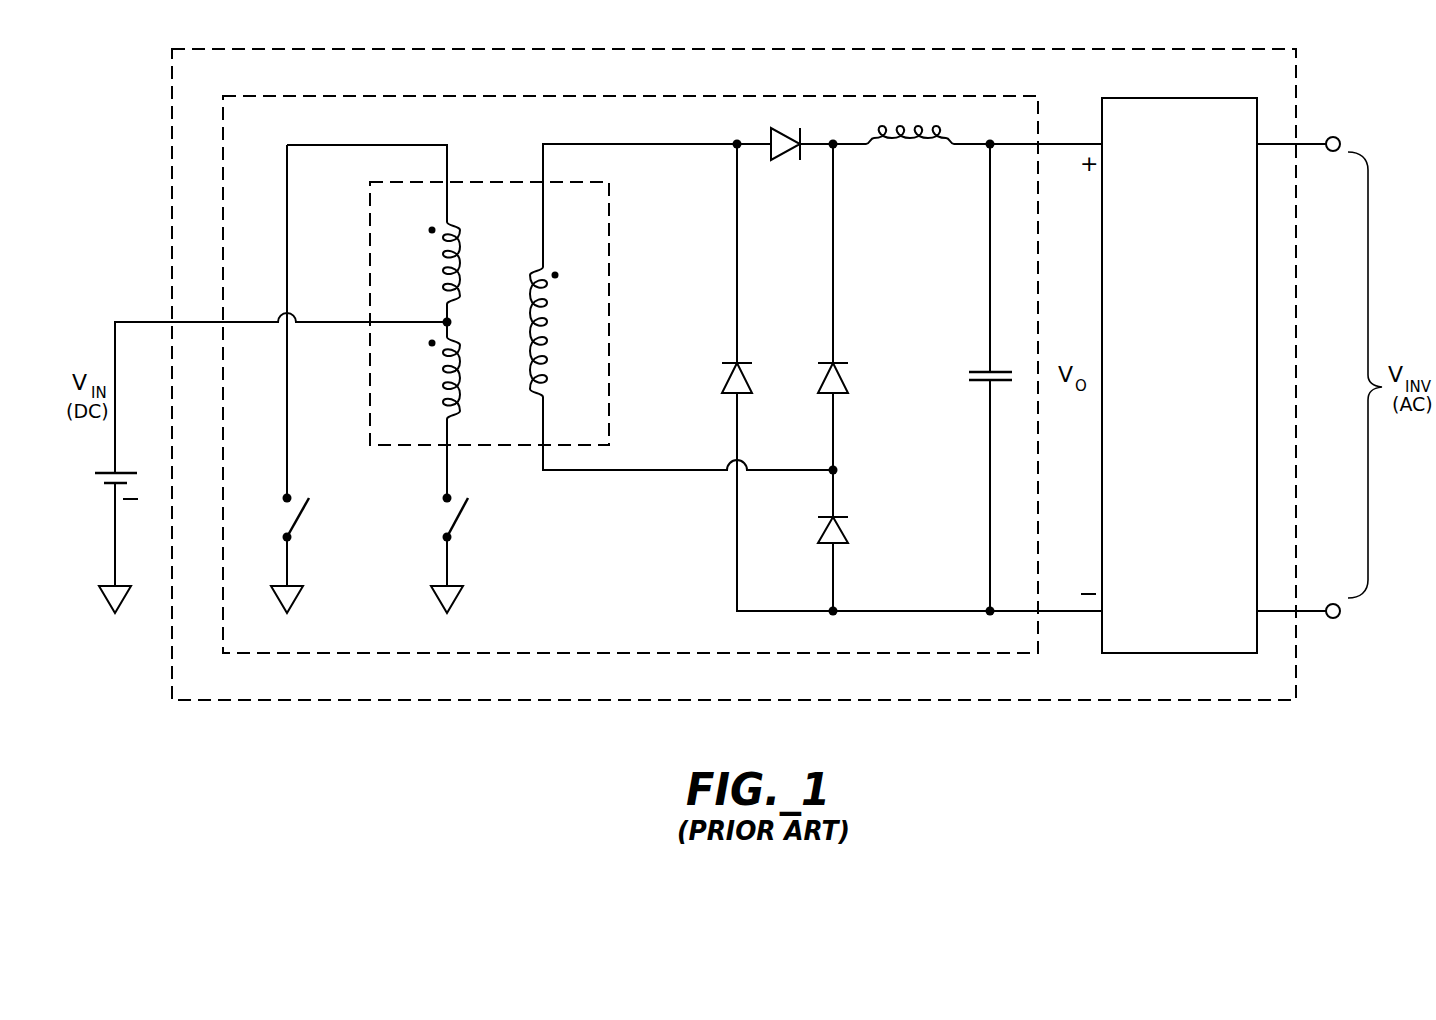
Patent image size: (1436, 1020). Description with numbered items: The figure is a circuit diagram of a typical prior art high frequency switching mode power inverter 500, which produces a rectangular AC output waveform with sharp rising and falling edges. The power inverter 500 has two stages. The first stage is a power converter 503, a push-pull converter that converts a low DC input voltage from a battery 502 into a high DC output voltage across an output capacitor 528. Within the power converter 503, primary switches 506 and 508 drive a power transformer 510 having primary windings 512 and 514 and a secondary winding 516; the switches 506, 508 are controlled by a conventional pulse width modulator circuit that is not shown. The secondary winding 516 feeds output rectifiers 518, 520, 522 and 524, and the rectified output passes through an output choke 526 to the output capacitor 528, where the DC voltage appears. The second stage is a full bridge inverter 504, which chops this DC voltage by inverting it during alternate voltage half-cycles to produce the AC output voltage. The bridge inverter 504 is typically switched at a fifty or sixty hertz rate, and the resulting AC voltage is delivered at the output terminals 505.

The power inverter 500 is at (343, 701).
The battery 502 is at (113, 471).
The power converter 503 is at (934, 655).
The full bridge inverter 504 is at (1160, 358).
The output terminals 505 is at (1338, 136).
The primary switch 506 is at (296, 522).
The primary switch 508 is at (456, 522).
The power transformer 510 is at (472, 182).
The primary winding 512 is at (449, 222).
The primary winding 514 is at (449, 338).
The secondary winding 516 is at (540, 267).
The output rectifier 518 is at (741, 395).
The output rectifier 520 is at (845, 531).
The output rectifier 522 is at (845, 380).
The output rectifier 524 is at (784, 128).
The output choke 526 is at (900, 146).
The output capacitor 528 is at (986, 368).